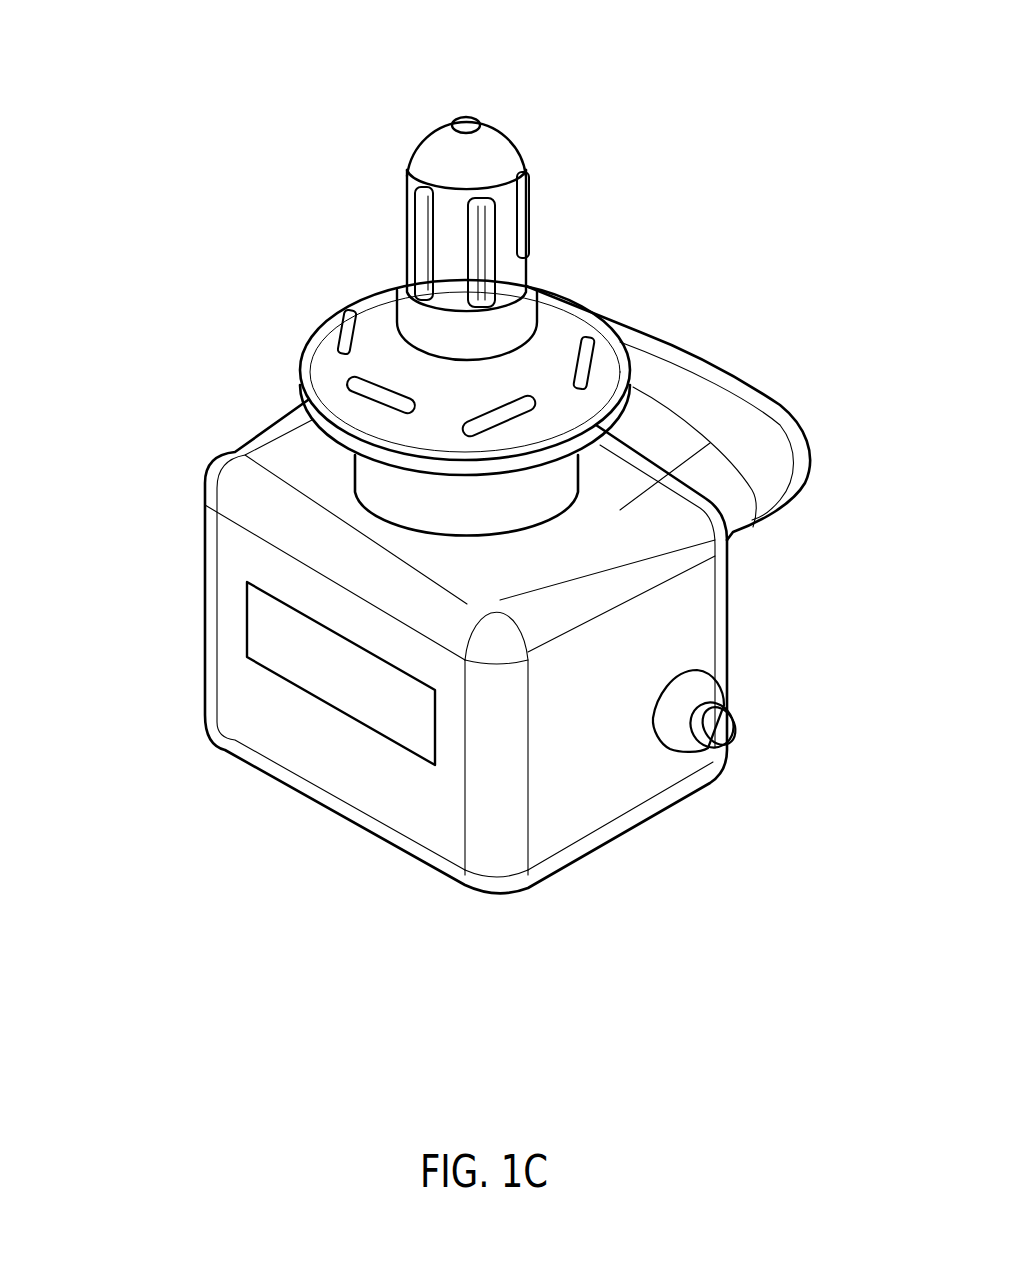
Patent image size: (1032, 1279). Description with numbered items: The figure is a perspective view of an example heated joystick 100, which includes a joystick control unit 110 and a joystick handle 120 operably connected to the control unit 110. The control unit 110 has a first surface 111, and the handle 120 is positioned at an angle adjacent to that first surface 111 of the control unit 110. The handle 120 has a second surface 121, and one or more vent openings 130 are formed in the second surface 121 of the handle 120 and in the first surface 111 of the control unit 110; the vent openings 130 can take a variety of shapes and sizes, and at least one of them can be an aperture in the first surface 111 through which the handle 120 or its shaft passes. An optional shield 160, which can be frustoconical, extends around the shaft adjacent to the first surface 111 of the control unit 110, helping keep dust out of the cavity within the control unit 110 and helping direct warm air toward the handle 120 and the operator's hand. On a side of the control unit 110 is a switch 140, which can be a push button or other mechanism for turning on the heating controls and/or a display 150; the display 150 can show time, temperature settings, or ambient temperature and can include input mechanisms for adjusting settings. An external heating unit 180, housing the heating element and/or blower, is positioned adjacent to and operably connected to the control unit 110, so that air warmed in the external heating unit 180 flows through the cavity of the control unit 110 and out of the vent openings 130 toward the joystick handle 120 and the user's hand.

The joystick 100 is at (100, 62).
The joystick control unit 110 is at (237, 560).
The first surface 111 is at (520, 567).
The joystick handle 120 is at (507, 215).
The second surface 121 is at (570, 337).
The vent openings 130 is at (427, 210).
The switch 140 is at (733, 738).
The display 150 is at (402, 706).
The shield 160 is at (400, 497).
The external heating unit 180 is at (727, 425).